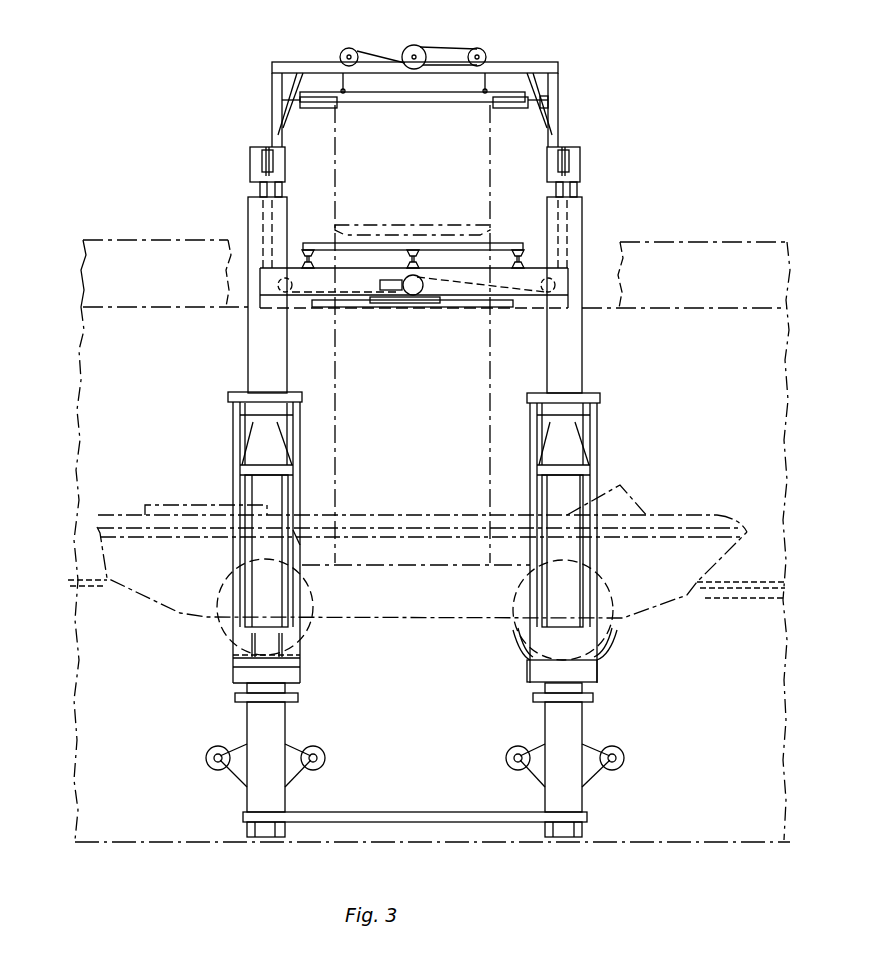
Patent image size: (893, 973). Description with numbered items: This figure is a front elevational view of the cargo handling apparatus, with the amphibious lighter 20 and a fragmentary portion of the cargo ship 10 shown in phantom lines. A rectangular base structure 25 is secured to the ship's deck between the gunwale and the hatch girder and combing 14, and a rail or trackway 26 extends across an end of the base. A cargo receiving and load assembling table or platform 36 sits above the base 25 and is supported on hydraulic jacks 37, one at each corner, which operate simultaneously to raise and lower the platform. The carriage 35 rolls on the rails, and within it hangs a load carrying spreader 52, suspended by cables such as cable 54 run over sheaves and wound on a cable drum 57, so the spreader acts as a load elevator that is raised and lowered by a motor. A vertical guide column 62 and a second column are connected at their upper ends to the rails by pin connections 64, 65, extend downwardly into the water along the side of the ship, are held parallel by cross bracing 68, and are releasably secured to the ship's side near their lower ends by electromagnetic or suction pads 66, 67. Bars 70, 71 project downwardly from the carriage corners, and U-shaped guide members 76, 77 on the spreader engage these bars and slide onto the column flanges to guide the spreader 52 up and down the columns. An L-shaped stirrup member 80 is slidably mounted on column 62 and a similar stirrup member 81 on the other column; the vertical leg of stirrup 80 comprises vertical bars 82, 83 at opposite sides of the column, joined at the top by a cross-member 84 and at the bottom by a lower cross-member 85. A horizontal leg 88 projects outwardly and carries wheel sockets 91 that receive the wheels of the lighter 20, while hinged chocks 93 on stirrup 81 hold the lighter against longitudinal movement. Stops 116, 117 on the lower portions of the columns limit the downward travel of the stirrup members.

The cargo ship 10 is at (80, 318).
The hatch girder and combing 14 is at (125, 240).
The lighter 20 is at (138, 515).
The rectangular base structure 25 is at (436, 268).
The rail or trackway 26 is at (250, 155).
The carriage 35 is at (556, 62).
The cargo receiving and load assembling table or platform 36 is at (312, 243).
The hydraulic jack 37 is at (316, 260).
The load carrying spreader 52 is at (428, 103).
The cable 54 is at (358, 52).
The cable drum 57 is at (419, 47).
The vertical guide column 62 is at (248, 358).
The pin connection 64 is at (260, 188).
The pin connection 65 is at (577, 188).
The electromagnetic or suction pad 66 is at (206, 755).
The electromagnetic or suction pad 67 is at (506, 754).
The cross bracing 68 is at (346, 812).
The bar 70 is at (282, 188).
The bar 71 is at (556, 188).
The U-shaped guide member 76 is at (283, 98).
The U-shaped guide member 77 is at (549, 103).
The L-shaped stirrup member 80 is at (228, 397).
The L-shaped stirrup member 81 is at (530, 446).
The vertical bar 82 is at (233, 561).
The vertical bar 83 is at (300, 540).
The cross-member 84 is at (278, 392).
The lower cross-member 85 is at (240, 684).
The horizontal leg 88 is at (236, 665).
The wheel socket 91 is at (240, 648).
The hinged chock 93 is at (514, 640).
The stop 116 is at (241, 702).
The stop 117 is at (534, 698).